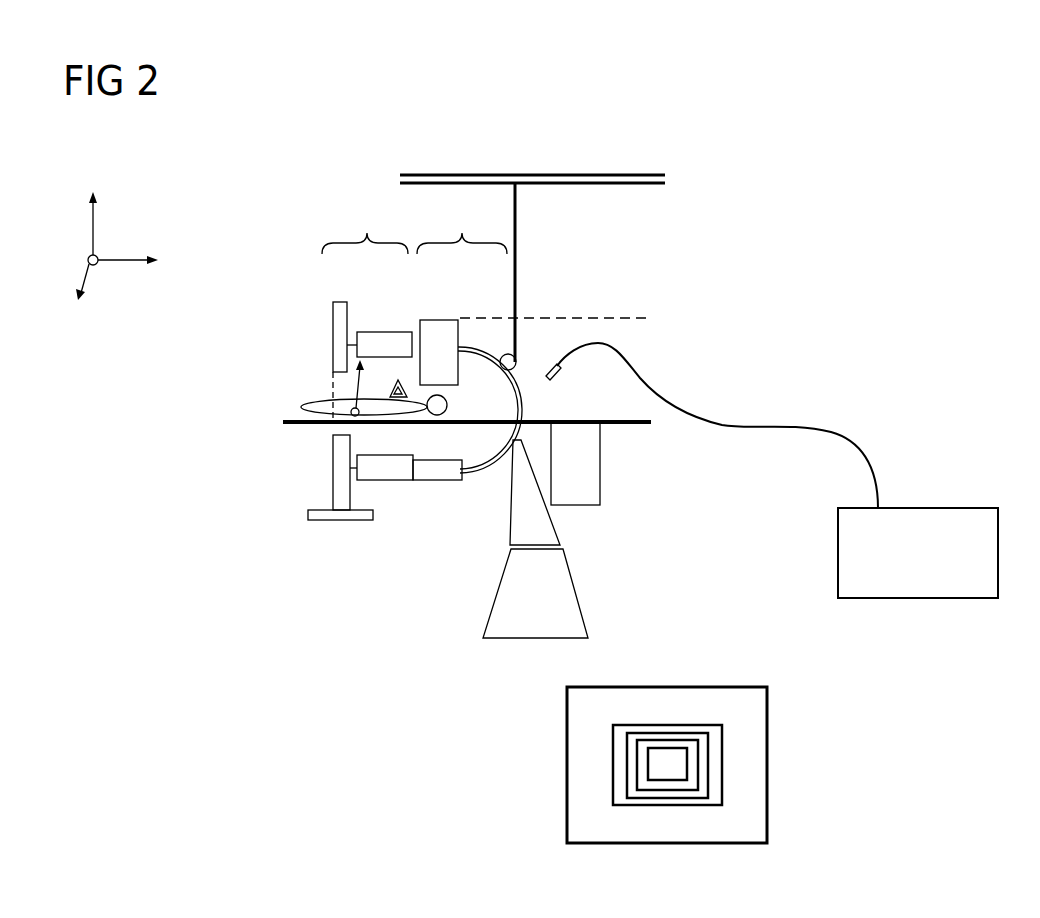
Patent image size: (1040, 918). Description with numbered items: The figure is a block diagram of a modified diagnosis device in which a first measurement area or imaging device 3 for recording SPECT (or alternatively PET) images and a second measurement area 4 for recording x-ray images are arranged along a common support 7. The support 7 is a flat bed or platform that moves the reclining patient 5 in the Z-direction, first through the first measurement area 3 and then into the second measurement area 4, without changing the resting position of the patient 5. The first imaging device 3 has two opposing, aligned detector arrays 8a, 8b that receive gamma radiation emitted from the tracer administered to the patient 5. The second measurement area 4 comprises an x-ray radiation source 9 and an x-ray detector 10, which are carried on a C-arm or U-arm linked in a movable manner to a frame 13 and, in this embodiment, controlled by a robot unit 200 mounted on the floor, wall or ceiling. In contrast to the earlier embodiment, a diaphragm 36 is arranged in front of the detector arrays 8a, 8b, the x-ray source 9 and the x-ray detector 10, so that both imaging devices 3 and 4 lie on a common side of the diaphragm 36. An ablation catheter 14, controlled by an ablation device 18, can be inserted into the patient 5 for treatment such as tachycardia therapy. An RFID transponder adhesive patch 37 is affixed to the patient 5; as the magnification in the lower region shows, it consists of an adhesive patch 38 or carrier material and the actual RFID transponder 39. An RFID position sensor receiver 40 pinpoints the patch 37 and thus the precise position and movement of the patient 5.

The first measurement area or imaging device 3 is at (365, 226).
The second measurement area 4 is at (462, 226).
The patient 5 is at (302, 408).
The support 7 is at (633, 429).
The detector array 8a is at (375, 332).
The detector array 8b is at (376, 483).
The radiation source 9 is at (433, 332).
The x-ray detector 10 is at (436, 483).
The frame 13 is at (615, 180).
The ablation catheter 14 is at (549, 361).
The ablation device 18 is at (902, 569).
The diaphragm 36 is at (333, 338).
The RFID transponder adhesive patch 37 is at (398, 380).
The adhesive patch 38 is at (745, 710).
The RFID transponder 39 is at (670, 765).
The RFID position sensor receiver 40 is at (88, 260).
The robot unit 200 is at (576, 586).